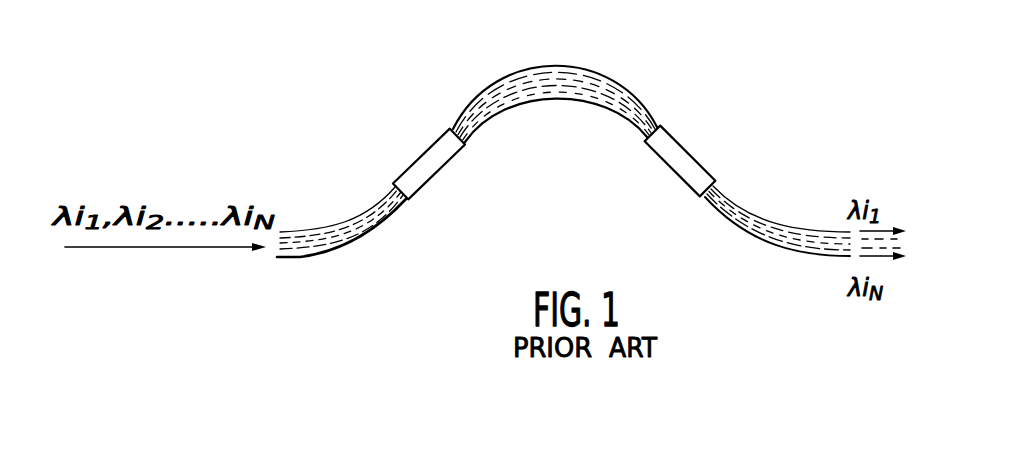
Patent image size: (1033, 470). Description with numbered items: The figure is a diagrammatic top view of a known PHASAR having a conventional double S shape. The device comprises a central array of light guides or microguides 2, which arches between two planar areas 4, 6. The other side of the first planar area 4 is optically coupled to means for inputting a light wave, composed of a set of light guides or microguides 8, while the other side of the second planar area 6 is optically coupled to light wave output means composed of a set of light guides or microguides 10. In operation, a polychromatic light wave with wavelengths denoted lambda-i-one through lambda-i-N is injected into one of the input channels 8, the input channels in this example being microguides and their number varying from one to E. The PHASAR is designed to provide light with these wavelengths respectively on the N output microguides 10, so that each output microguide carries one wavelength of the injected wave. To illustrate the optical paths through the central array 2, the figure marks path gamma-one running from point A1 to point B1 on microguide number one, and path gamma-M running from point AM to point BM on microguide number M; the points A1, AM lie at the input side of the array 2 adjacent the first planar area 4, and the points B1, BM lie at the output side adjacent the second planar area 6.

The central array of light guides or microguides 2 is at (546, 102).
The planar area 4 is at (430, 162).
The planar area 6 is at (697, 167).
The set of light guides or microguides (input channels) 8 is at (310, 256).
The set of light guides or microguides (output microguides) 10 is at (810, 252).
The point A1 is at (457, 127).
The point AM is at (467, 141).
The point B1 is at (655, 127).
The point BM is at (637, 138).